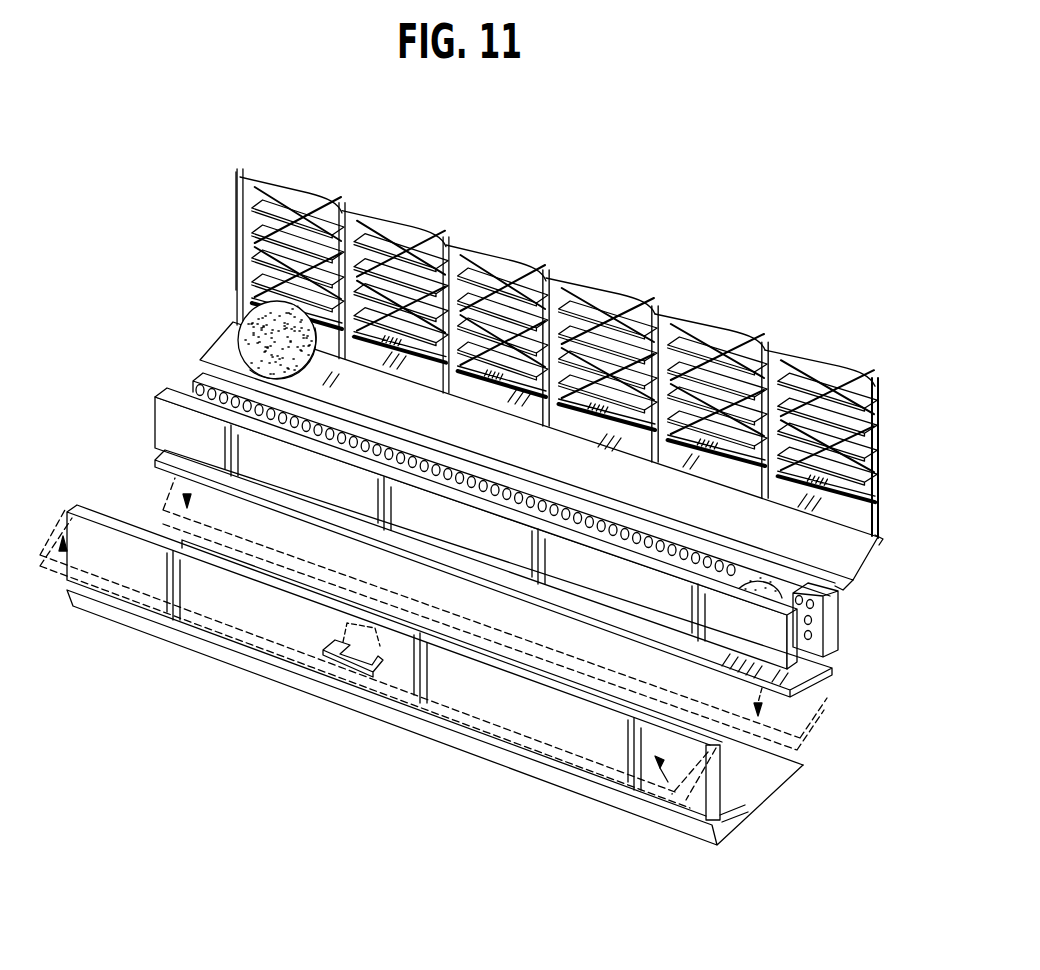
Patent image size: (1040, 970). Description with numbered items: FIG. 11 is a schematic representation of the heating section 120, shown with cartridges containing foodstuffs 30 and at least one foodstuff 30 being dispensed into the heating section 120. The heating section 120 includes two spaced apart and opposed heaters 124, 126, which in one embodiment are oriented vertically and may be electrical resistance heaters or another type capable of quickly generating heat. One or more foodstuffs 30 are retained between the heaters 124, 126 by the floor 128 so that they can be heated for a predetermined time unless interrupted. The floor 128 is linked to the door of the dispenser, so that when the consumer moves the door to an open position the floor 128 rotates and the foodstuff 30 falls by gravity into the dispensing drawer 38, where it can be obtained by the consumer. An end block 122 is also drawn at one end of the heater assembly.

The heating section 120 is at (897, 548).
The end block 122 is at (832, 620).
The heater 124 is at (167, 420).
The heater 126 is at (193, 379).
The floor 128 is at (822, 683).
The foodstuff 30 is at (237, 333).
The dispensing drawer 38 is at (742, 803).